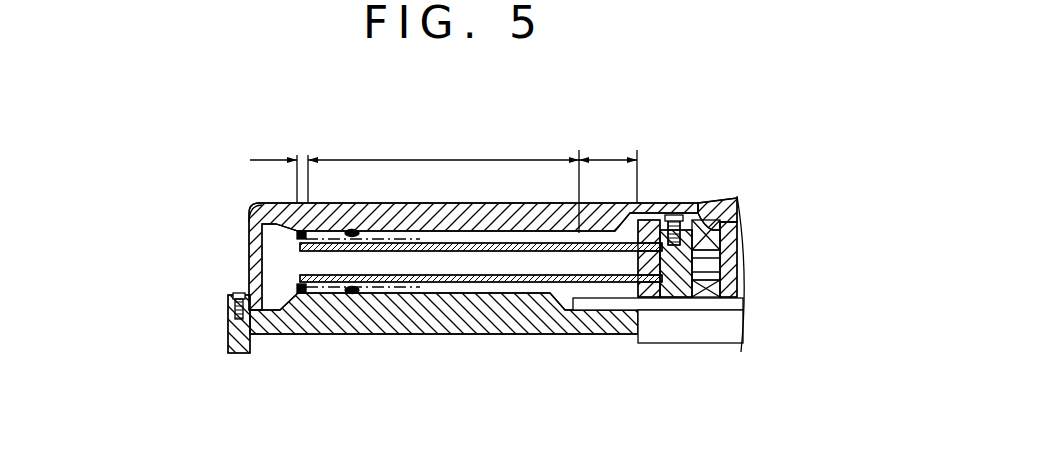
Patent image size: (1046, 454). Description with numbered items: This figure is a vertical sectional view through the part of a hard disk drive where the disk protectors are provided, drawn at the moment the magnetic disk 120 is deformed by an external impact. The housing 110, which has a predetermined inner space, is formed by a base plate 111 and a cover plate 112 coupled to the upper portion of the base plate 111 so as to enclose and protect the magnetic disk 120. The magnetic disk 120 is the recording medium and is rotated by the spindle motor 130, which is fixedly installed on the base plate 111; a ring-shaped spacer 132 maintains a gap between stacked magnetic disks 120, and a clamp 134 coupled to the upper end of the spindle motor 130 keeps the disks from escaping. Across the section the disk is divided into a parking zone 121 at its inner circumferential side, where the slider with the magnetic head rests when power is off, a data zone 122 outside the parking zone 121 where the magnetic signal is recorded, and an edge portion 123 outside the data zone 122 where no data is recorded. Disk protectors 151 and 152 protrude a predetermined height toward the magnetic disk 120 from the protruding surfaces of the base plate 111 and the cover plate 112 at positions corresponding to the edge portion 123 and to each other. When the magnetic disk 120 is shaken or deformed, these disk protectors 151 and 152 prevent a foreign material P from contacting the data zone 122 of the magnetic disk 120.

The housing 110 is at (141, 253).
The base plate 111 is at (228, 330).
The cover plate 112 is at (249, 255).
The magnetic disk 120 is at (558, 282).
The parking zone 121 is at (610, 158).
The data zone 122 is at (458, 158).
The edge portion 123 is at (300, 157).
The spindle motor 130 is at (688, 346).
The spacer 132 is at (701, 208).
The clamp 134 is at (657, 222).
The disk protector 151 is at (300, 293).
The disk protector 152 is at (252, 216).
The foreign material P is at (358, 232).